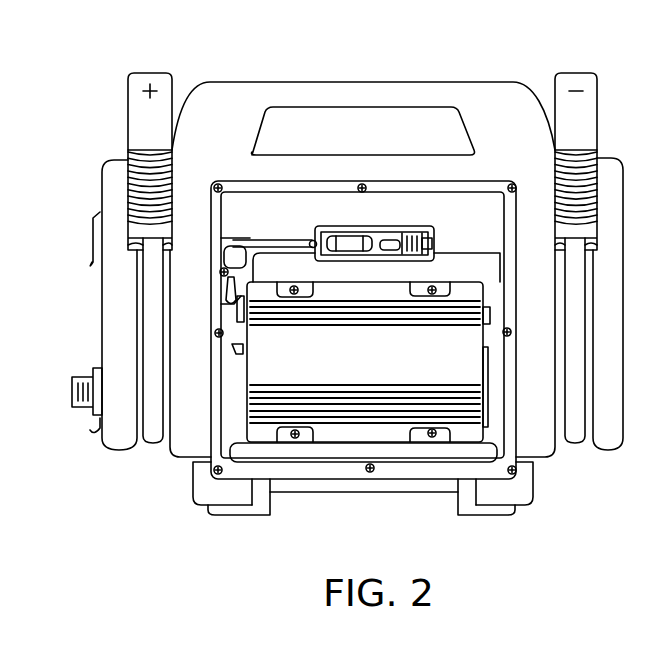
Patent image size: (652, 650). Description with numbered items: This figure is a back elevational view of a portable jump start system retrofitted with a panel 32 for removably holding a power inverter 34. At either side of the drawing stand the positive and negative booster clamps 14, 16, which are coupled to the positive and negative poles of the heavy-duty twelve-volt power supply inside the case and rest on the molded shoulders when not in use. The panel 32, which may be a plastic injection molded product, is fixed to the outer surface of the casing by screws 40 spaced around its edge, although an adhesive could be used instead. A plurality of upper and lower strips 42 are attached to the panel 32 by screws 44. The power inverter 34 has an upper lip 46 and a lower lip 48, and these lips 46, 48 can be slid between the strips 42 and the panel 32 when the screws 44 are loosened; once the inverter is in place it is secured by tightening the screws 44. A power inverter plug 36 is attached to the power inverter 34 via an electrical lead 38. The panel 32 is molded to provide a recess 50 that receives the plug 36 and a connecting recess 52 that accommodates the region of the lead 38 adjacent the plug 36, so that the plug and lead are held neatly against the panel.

The positive booster clamp 14 is at (148, 118).
The negative booster clamp 16 is at (575, 108).
The panel 32 is at (480, 200).
The power inverter 34 is at (465, 373).
The power inverter plug 36 is at (373, 240).
The electrical lead 38 is at (221, 281).
The screws 40 is at (218, 186).
The upper and lower strips 42 is at (277, 441).
The screws 44 is at (432, 440).
The upper lip 46 is at (403, 292).
The lower lip 48 is at (473, 440).
The recess 50 is at (432, 237).
The connecting recess 52 is at (272, 240).